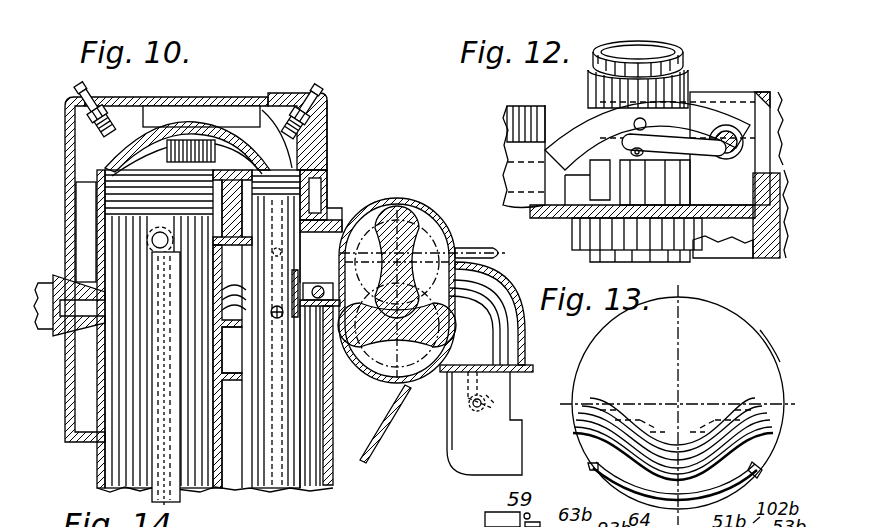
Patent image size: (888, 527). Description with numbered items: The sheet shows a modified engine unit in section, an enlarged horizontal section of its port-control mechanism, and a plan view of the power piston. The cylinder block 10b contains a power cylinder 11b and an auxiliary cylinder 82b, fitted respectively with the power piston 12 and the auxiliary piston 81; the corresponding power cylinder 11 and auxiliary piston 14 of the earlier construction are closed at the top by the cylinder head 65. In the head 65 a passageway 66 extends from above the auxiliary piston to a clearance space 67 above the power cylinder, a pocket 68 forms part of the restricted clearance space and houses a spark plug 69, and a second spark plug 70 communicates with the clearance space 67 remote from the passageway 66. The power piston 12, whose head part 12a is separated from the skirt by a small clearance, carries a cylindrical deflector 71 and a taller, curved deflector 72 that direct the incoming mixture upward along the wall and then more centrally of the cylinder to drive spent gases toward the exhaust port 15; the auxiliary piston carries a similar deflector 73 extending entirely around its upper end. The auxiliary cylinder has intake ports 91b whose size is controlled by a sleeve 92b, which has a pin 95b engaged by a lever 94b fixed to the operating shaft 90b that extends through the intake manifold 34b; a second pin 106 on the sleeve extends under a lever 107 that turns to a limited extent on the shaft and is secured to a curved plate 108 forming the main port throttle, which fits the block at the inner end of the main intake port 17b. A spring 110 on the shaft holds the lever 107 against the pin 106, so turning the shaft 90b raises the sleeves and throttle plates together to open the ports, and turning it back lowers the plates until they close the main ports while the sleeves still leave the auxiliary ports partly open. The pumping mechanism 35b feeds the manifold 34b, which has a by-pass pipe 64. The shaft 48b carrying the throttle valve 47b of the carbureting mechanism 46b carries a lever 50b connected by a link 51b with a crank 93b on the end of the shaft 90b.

In FIG. 10, the cylinder block 10b is at (66, 400).
In FIG. 12, the cylinder block 10b is at (505, 145).
In FIG. 10, the power cylinder 11b is at (110, 455).
In FIG. 10, the power piston 12 is at (110, 248).
In FIG. 13, the power piston 12 is at (677, 405).
In FIG. 13, the head part of piston 12a is at (762, 338).
In FIG. 10, the main intake port 17b is at (206, 340).
In FIG. 10, the intake manifold 34b is at (347, 220).
In FIG. 12, the intake manifold 34b is at (748, 117).
In FIG. 10, the pumping mechanism 35b is at (434, 218).
In FIG. 10, the carbureting mechanism 46b is at (450, 465).
In FIG. 10, the throttle valve 47b is at (447, 413).
In FIG. 10, the shaft 48b is at (477, 412).
In FIG. 10, the lever 50b is at (482, 385).
In FIG. 10, the link 51b is at (505, 337).
In FIG. 10, the by-pass pipe 64 is at (474, 244).
In FIG. 10, the cylinder head 65 is at (230, 97).
In FIG. 10, the passageway 66 is at (223, 147).
In FIG. 10, the clearance space 67 is at (203, 127).
In FIG. 10, the pocket 68 is at (261, 125).
In FIG. 10, the spark plug 69 is at (285, 120).
In FIG. 10, the spark plug 70 is at (95, 133).
In FIG. 10, the deflector 71 is at (203, 140).
In FIG. 13, the deflector 71 is at (770, 470).
In FIG. 10, the deflector 72 is at (163, 133).
In FIG. 13, the deflector 72 is at (757, 452).
In FIG. 10, the deflector 73 is at (323, 168).
In FIG. 10, the auxiliary piston 81 is at (315, 197).
In FIG. 12, the auxiliary piston 81 is at (655, 48).
In FIG. 10, the auxiliary cylinder 82b is at (300, 412).
In FIG. 12, the auxiliary cylinder 82b is at (586, 52).
In FIG. 12, the operating shaft 90b is at (732, 126).
In FIG. 10, the intake port 91b is at (314, 312).
In FIG. 10, the sleeve 92b is at (275, 252).
In FIG. 12, the sleeve 92b is at (575, 102).
In FIG. 10, the crank 93b is at (378, 207).
In FIG. 12, the lever 94b is at (686, 163).
In FIG. 12, the pin 95b is at (643, 148).
In FIG. 12, the pin 106 is at (645, 120).
In FIG. 12, the lever 107 is at (682, 56).
In FIG. 10, the curved plate 108 is at (221, 308).
In FIG. 12, the curved plate 108 is at (543, 110).
In FIG. 12, the spring 110 is at (728, 130).
In FIG. 10, the power cylinder 11 is at (208, 263).
In FIG. 13, the auxiliary piston 14 is at (563, 424).
In FIG. 13, the exhaust port 15 is at (694, 288).